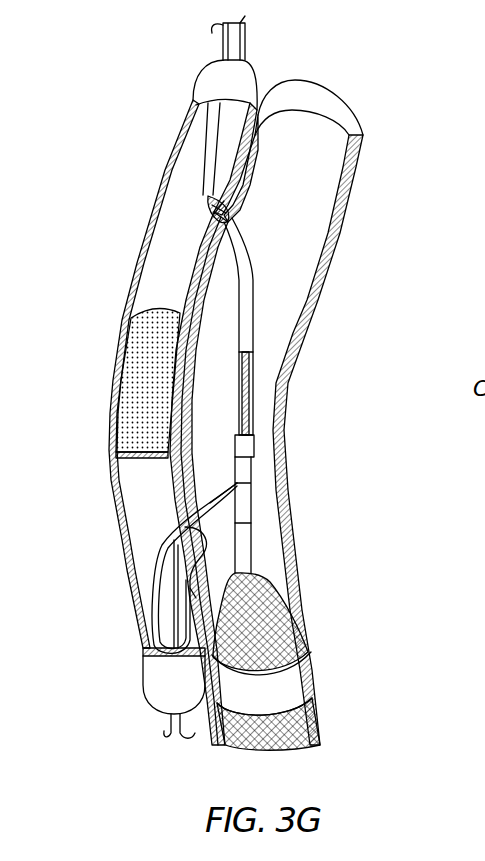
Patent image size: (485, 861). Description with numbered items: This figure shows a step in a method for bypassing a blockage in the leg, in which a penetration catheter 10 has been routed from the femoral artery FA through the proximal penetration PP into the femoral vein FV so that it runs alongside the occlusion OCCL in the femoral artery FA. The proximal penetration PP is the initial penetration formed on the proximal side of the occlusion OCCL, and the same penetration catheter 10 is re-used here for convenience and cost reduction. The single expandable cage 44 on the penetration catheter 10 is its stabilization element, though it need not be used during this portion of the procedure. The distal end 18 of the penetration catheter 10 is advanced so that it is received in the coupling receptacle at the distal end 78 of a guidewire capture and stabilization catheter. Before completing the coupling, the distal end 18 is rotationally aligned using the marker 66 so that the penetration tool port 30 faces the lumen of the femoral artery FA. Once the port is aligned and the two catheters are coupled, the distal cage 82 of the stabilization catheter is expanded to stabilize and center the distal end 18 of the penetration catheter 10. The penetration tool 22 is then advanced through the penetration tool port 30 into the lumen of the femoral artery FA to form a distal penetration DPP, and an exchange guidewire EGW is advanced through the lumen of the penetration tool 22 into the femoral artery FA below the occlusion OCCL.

The femoral artery FA is at (140, 263).
The femoral vein FV is at (312, 305).
The proximal penetration PP is at (233, 208).
The penetration catheter 10 is at (243, 273).
The single expandable cage 44 is at (285, 382).
The marker 66 is at (252, 456).
The distal end 18 is at (240, 513).
The distal end 78 is at (247, 557).
The distal cage 82 is at (277, 642).
The occlusion OCCL is at (150, 402).
The penetration tool port 30 is at (233, 485).
The penetration tool 22 is at (180, 525).
The exchange guidewire EGW is at (150, 578).
The distal penetration DPP is at (193, 593).